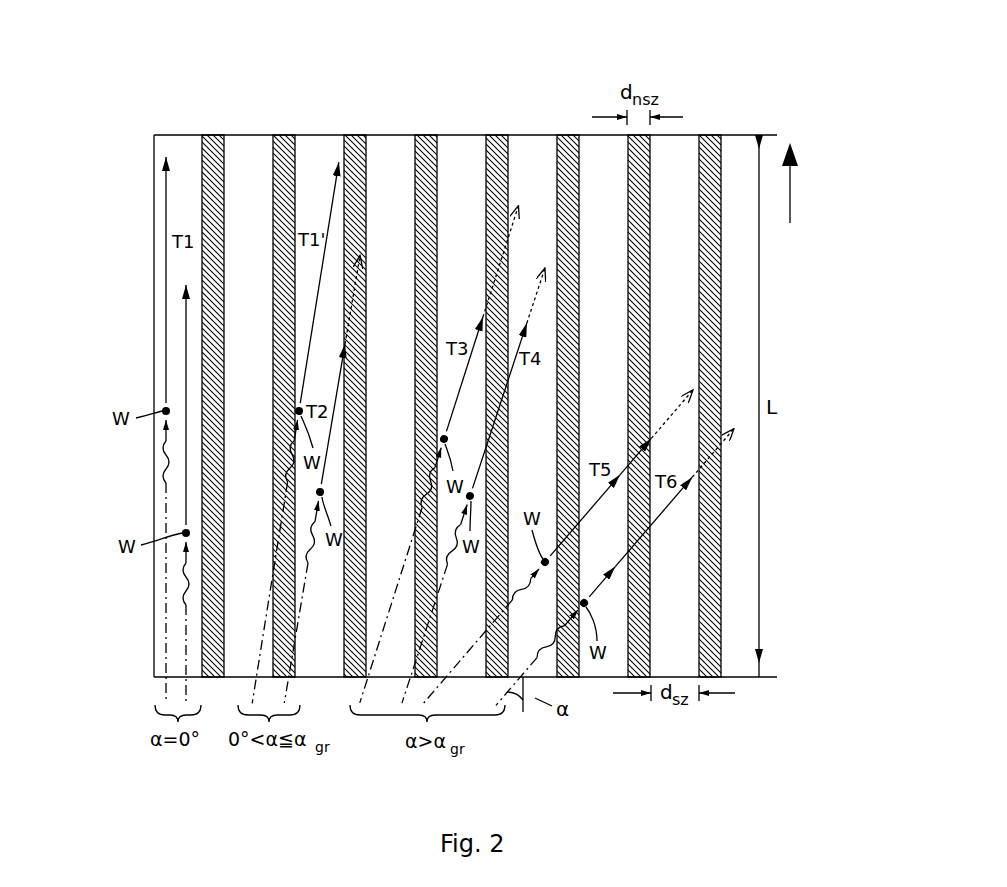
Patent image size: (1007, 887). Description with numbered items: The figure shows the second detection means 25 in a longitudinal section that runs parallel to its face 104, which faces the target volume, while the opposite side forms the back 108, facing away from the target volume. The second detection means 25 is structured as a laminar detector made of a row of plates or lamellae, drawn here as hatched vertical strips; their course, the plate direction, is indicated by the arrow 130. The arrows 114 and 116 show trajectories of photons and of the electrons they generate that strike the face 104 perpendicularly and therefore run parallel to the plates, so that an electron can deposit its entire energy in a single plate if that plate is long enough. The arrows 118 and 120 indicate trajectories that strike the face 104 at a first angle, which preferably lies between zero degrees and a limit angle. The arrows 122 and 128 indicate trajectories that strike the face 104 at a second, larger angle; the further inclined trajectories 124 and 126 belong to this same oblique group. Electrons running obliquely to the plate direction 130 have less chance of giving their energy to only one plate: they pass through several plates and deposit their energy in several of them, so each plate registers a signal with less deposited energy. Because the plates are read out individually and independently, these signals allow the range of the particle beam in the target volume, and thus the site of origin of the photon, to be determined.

The second detection means 25 is at (178, 80).
The face 104 is at (607, 677).
The back 108 is at (705, 135).
The arrow 114 is at (163, 207).
The arrow 116 is at (185, 335).
The arrow 118 is at (330, 203).
The arrow 120 is at (380, 357).
The arrow 122 is at (472, 353).
The trajectory T4 124 is at (513, 353).
The trajectory T5 126 is at (655, 435).
The arrow 128 is at (672, 505).
The arrow 130 is at (796, 192).